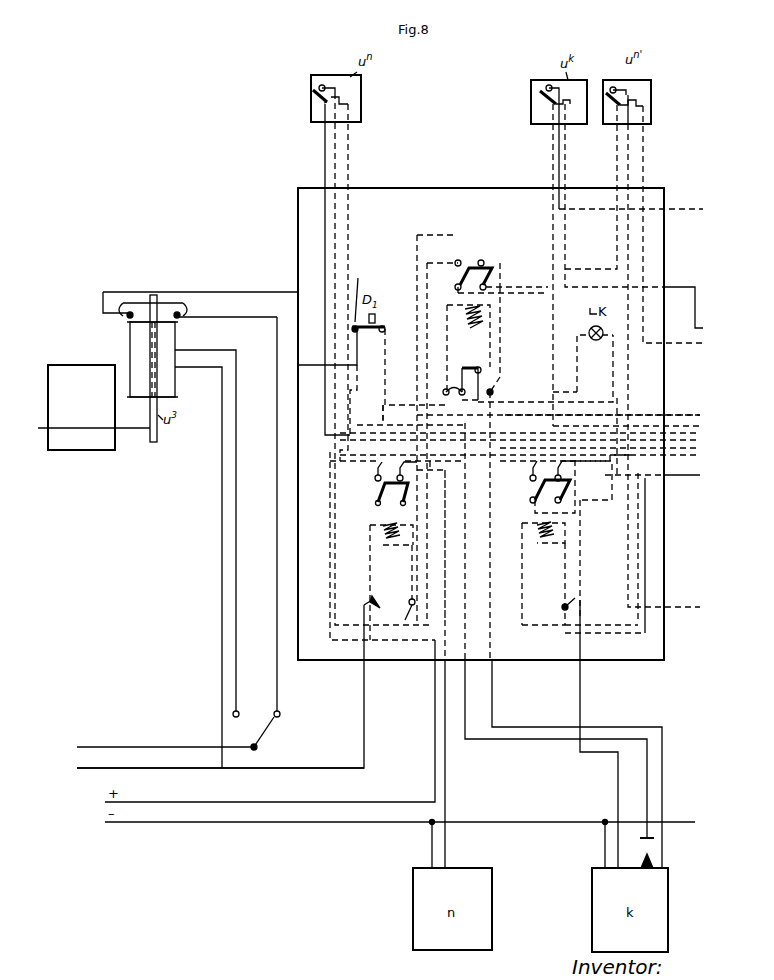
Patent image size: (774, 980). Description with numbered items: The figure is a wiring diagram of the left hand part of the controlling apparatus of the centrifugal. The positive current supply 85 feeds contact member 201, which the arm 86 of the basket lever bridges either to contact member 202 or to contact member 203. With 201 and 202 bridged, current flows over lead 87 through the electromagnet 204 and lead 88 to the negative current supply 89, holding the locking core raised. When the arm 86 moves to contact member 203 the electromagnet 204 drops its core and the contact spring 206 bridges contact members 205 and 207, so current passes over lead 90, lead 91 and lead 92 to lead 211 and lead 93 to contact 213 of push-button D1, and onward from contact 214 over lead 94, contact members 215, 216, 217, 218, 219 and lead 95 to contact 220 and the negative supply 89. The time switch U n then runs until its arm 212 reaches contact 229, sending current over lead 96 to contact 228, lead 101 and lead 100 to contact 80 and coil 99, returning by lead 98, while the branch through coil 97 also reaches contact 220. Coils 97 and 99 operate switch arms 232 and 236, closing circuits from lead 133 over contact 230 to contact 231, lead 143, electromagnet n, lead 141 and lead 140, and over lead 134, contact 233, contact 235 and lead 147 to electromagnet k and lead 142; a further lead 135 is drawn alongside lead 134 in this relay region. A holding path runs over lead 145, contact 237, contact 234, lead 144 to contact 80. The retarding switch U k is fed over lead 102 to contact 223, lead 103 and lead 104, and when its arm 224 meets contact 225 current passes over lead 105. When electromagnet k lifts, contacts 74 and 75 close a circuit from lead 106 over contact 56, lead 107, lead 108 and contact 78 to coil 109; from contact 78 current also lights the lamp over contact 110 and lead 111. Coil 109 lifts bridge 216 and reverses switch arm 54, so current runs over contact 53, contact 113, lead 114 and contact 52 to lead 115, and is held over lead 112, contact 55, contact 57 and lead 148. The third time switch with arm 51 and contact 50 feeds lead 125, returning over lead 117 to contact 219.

The contact 229 is at (322, 85).
The arm 212 is at (313, 92).
The lead 211 is at (333, 103).
The lead 96 is at (334, 134).
The lead 93 is at (349, 148).
The lead 92 is at (325, 203).
The contact 225 is at (549, 85).
The arm 224 is at (540, 92).
The contact 223 is at (556, 104).
The lead 105 is at (559, 132).
The lead 102 is at (553, 153).
The lead 103 is at (565, 187).
The contact 50 is at (613, 87).
The arm 51 is at (612, 95).
The contact 52 is at (620, 105).
The lead 125 is at (628, 140).
The lead 114 is at (617, 165).
The lead 115 is at (643, 170).
The lead 107 is at (417, 237).
The lead 106 is at (427, 275).
The contact 56 is at (459, 259).
The contact 57 is at (482, 260).
The contact 53 is at (447, 281).
The switch arm 54 is at (476, 277).
The contact 55 is at (499, 283).
The lead 112 is at (517, 275).
The contact 113 is at (516, 293).
The lead 148 is at (505, 352).
The coil 109 is at (468, 347).
The contact 213 is at (357, 290).
The lead 104 is at (298, 365).
The contact 214 is at (385, 329).
The lead 94 is at (385, 365).
The lead 95 is at (357, 390).
The bridge 216 is at (466, 368).
The contact member 215 is at (480, 367).
The contact member 217 is at (461, 368).
The contact member 218 is at (460, 390).
The contact member 219 is at (444, 392).
The contact 78 is at (493, 390).
The lead 111 is at (520, 400).
The contact 110 is at (577, 363).
The lead 117 is at (619, 404).
The lead 91 is at (103, 297).
The lead 100 is at (700, 475).
The lead 101 is at (670, 480).
The lead 134 is at (528, 437).
The conductor 135 is at (565, 452).
The lead 133 is at (330, 508).
The contact 230 is at (375, 478).
The contact 231 is at (401, 471).
The switch arm 232 is at (391, 502).
The lead 143 is at (420, 478).
The coil 97 is at (398, 535).
The contact 220 is at (228, 680).
The contact 228 is at (419, 582).
The lead 108 is at (490, 545).
The lead 98 is at (490, 613).
The contact 233 is at (530, 478).
The contact 234 is at (559, 471).
The contact 235 is at (530, 499).
The switch arm 236 is at (552, 493).
The contact 237 is at (562, 498).
The lead 145 is at (612, 468).
The coil 99 is at (537, 533).
The lead 144 is at (580, 528).
The contact 80 is at (562, 607).
The lead 147 is at (582, 596).
The electromagnet 204 is at (130, 344).
The contact spring 206 is at (135, 300).
The contact member 205 is at (177, 312).
The contact member 207 is at (128, 317).
The lead 88 is at (222, 462).
The lead 87 is at (236, 462).
The lead 90 is at (277, 500).
The contact member 202 is at (251, 708).
The contact member 203 is at (280, 714).
The arm 86 is at (266, 730).
The contact member 201 is at (257, 748).
The positive current supply 85 is at (165, 739).
The negative current supply 89 is at (160, 768).
The lead 140 is at (255, 822).
The lead 141 is at (432, 845).
The lead 142 is at (605, 845).
The contact 74 is at (656, 838).
The contact 75 is at (652, 858).